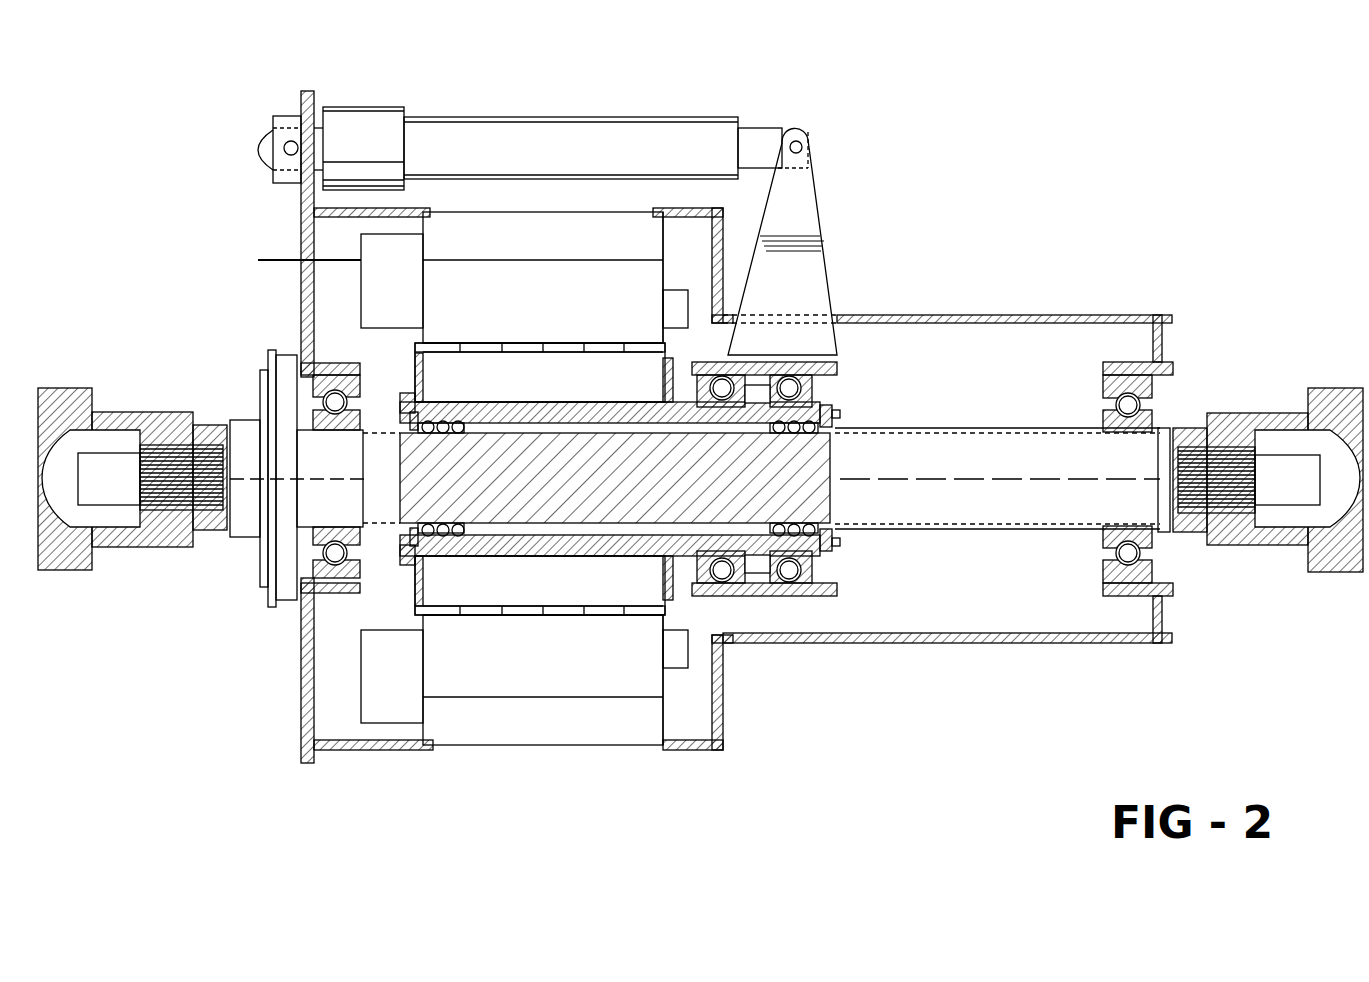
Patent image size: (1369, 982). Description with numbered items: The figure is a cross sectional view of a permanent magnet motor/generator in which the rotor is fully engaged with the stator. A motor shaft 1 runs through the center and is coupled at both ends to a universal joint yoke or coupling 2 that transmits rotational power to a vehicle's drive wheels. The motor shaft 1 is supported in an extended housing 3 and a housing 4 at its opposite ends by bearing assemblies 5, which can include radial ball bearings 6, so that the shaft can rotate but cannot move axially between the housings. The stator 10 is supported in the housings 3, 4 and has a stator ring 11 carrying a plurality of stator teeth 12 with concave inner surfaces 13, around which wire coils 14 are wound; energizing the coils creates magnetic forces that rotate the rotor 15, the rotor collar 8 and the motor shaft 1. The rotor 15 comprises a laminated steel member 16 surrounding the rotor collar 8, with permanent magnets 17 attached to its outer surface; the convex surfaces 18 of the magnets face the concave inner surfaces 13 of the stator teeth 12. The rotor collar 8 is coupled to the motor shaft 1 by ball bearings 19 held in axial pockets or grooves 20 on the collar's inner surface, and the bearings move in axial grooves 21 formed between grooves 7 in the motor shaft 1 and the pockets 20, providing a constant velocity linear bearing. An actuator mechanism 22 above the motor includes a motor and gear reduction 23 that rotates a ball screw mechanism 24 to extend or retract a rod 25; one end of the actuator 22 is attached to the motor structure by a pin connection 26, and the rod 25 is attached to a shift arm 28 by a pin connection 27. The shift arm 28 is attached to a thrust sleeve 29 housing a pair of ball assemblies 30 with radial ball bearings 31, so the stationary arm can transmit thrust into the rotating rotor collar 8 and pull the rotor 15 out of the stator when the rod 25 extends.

The motor shaft 1 is at (988, 440).
The universal joint yoke or coupling 2 is at (118, 418).
The extended housing 3 is at (1042, 645).
The housing 4 is at (355, 752).
The bearing assembly 5 is at (332, 597).
The radial ball bearing 6 is at (342, 402).
The groove 7 is at (1040, 426).
The rotor collar 8 is at (620, 400).
The stator 10 is at (667, 690).
The stator ring 11 is at (545, 215).
The stator teeth 12 is at (652, 283).
The concave inner surface 13 is at (601, 342).
The wire coil 14 is at (693, 330).
The rotor 15 is at (411, 355).
The laminated steel member 16 is at (470, 372).
The permanent magnet 17 is at (520, 352).
The convex surface 18 is at (551, 342).
The ball bearing 19 is at (443, 434).
The axial pocket or groove 20 is at (440, 420).
The axial groove 21 is at (840, 427).
The actuator mechanism 22 is at (448, 110).
The motor and gear reduction 23 is at (367, 112).
The ball screw mechanism 24 is at (655, 128).
The rod 25 is at (760, 127).
The pin connection 26 is at (281, 114).
The pin connection 27 is at (803, 146).
The shift arm 28 is at (805, 213).
The thrust sleeve 29 is at (787, 362).
The ball assembly 30 is at (718, 378).
The radial ball bearing 31 is at (736, 375).